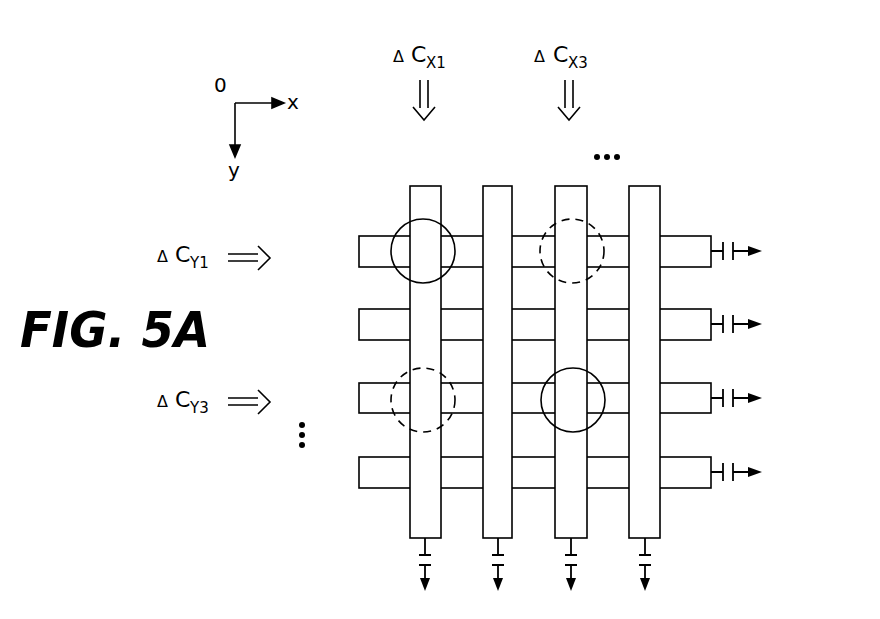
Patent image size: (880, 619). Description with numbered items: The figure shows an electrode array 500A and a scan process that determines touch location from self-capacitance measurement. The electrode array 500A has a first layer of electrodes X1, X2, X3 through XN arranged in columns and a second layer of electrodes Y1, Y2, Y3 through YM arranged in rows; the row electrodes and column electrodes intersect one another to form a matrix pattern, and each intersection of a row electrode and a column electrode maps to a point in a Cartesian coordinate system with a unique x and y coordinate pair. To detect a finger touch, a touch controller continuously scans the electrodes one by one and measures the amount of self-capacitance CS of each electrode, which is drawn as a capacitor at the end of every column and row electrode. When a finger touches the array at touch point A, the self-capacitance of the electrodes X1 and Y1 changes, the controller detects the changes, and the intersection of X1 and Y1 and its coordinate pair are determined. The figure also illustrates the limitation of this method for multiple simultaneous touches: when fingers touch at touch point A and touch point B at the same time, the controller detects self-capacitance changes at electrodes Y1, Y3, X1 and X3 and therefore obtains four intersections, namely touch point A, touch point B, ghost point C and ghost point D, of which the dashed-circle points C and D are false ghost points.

The electrode array 500A is at (680, 80).
The first column electrode X1 is at (425, 340).
The second column electrode X2 is at (498, 340).
The third column electrode X3 is at (571, 340).
The Nth column electrode XN is at (645, 340).
The first row electrode Y1 is at (501, 251).
The second row electrode Y2 is at (501, 324).
The third row electrode Y3 is at (501, 398).
The Mth row electrode YM is at (500, 472).
The touch point A is at (425, 236).
The touch point B is at (573, 388).
The ghost point C is at (425, 388).
The ghost point D is at (572, 236).
The self-capacitance CS is at (574, 405).